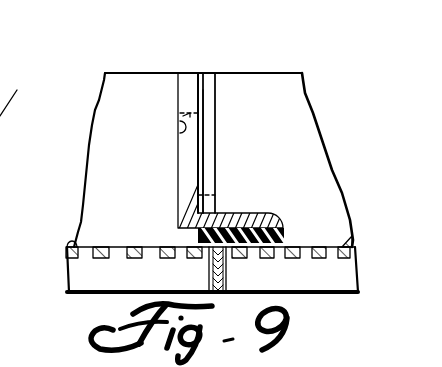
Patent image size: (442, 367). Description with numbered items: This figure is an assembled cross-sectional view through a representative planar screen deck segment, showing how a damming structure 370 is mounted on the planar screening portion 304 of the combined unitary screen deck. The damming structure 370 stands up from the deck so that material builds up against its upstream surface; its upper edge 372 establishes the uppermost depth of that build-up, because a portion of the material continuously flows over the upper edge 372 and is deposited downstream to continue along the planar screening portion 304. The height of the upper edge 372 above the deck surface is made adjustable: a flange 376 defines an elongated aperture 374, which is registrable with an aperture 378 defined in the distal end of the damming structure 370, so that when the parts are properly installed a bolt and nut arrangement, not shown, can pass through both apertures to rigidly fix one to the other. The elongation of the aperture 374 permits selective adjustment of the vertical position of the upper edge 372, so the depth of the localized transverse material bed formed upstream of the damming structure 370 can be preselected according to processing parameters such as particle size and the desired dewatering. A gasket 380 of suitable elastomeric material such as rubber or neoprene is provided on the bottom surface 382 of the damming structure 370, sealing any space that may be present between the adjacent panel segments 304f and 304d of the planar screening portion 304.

The planar screening portion 304 is at (297, 72).
The panel segment 304d is at (374, 232).
The panel segment 304f is at (72, 236).
The damming structure 370 is at (178, 173).
The upper edge 372 is at (180, 126).
The elongated aperture 374 is at (212, 99).
The flange 376 is at (212, 72).
The aperture 378 is at (180, 115).
The gasket 380 is at (282, 233).
The bottom surface 382 is at (179, 230).